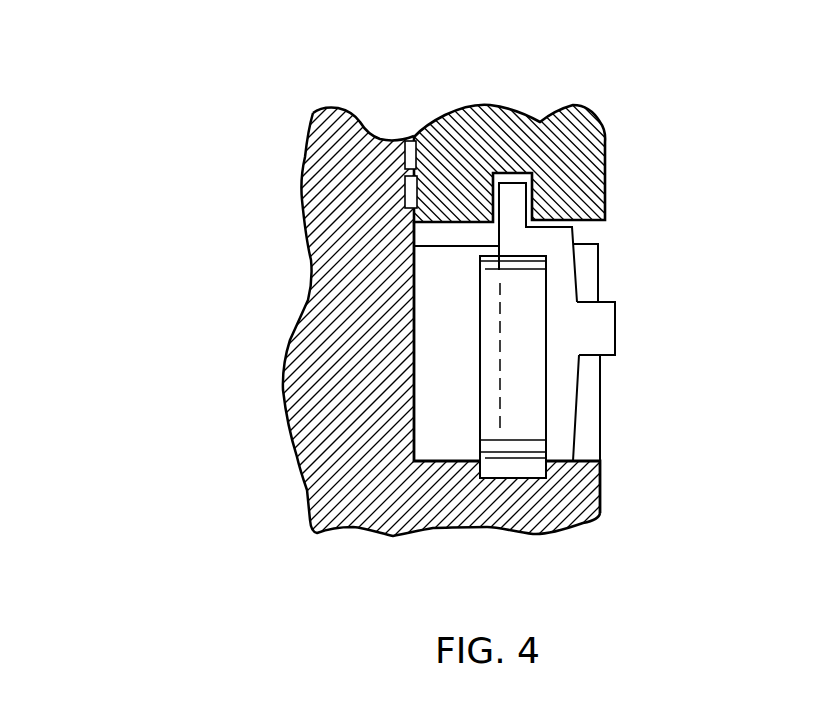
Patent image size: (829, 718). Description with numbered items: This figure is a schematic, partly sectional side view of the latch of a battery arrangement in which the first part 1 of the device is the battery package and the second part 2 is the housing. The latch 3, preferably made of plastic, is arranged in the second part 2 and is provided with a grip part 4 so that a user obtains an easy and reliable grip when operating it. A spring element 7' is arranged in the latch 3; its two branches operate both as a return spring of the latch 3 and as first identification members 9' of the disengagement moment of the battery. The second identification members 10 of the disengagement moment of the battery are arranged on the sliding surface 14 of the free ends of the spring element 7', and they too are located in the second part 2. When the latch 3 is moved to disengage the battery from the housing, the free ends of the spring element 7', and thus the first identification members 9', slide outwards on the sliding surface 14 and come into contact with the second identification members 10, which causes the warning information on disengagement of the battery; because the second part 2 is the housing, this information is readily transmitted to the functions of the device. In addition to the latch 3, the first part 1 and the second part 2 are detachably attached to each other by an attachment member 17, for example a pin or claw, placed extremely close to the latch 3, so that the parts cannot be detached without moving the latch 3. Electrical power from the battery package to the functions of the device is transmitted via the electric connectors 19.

The first part 1 is at (463, 123).
The second part 2 is at (327, 332).
The latch 3 is at (558, 285).
The grip part 4 is at (585, 332).
The spring element 7' is at (616, 359).
The first identification members 9' is at (631, 386).
The second identification members 10 is at (529, 469).
The sliding surface 14 is at (556, 450).
The attachment member 17 is at (405, 160).
The electric connectors 19 is at (405, 187).